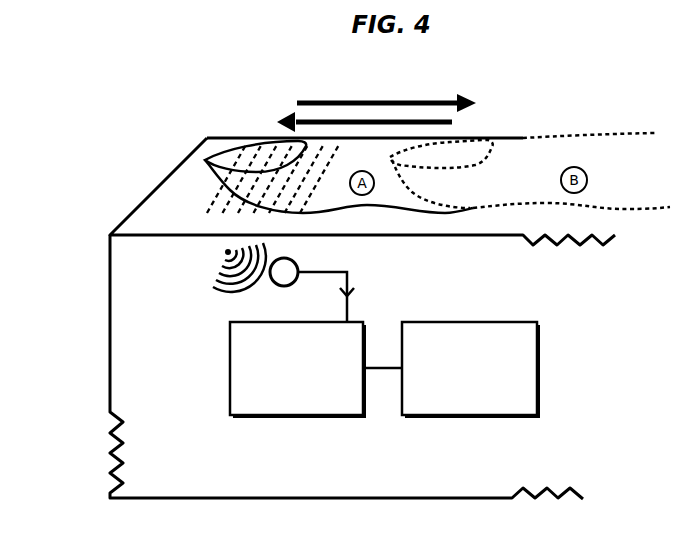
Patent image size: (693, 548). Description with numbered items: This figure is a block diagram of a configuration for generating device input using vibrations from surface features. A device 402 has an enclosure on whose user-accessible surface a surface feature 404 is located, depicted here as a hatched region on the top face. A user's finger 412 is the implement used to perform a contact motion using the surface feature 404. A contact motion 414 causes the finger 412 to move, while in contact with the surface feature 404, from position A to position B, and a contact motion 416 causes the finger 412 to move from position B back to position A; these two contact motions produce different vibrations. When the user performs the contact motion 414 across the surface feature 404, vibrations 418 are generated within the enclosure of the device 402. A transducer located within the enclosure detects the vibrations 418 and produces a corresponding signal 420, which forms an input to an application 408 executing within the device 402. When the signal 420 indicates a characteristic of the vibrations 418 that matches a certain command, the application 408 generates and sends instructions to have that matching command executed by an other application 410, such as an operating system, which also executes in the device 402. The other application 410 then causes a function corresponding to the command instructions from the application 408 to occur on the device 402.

The device 402 is at (110, 355).
The surface feature 404 is at (217, 196).
The application 408 is at (283, 386).
The other application 410 is at (457, 406).
The user's finger 412 is at (205, 161).
The contact motion 414 is at (512, 111).
The contact motion 416 is at (270, 126).
The vibrations 418 is at (225, 260).
The signal 420 is at (385, 298).